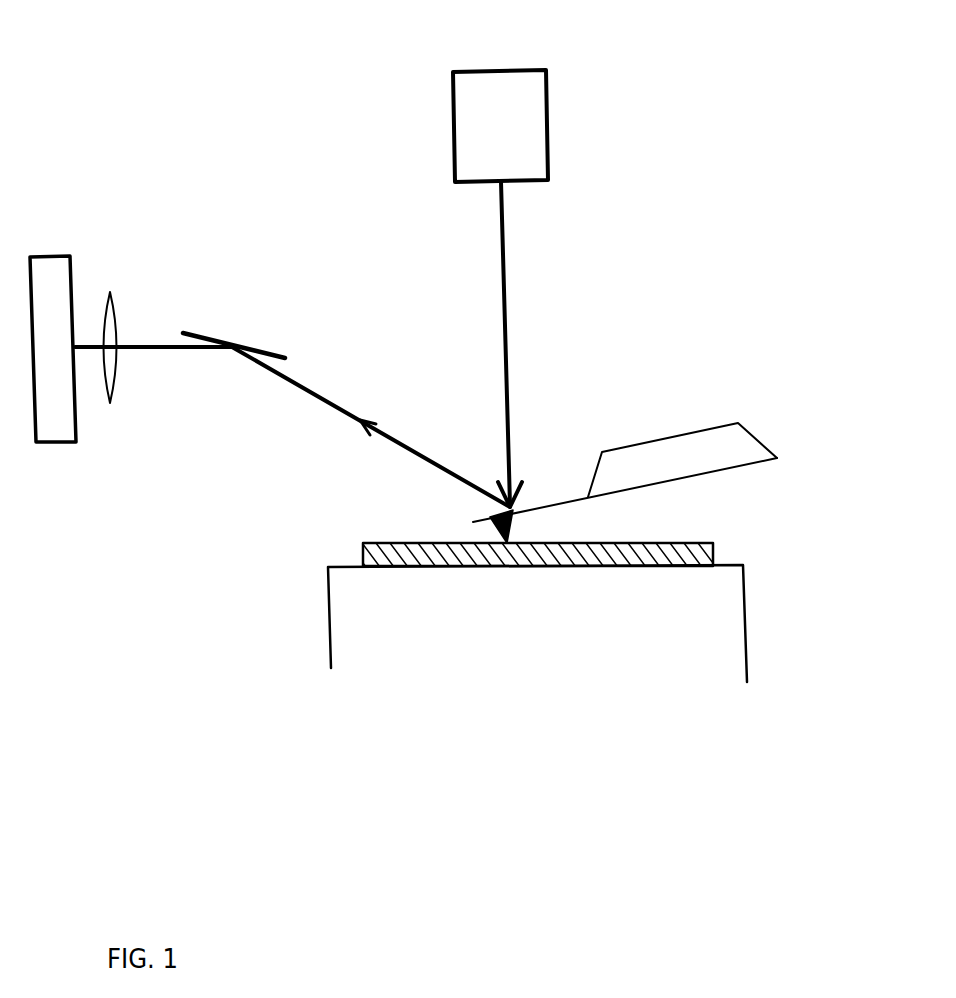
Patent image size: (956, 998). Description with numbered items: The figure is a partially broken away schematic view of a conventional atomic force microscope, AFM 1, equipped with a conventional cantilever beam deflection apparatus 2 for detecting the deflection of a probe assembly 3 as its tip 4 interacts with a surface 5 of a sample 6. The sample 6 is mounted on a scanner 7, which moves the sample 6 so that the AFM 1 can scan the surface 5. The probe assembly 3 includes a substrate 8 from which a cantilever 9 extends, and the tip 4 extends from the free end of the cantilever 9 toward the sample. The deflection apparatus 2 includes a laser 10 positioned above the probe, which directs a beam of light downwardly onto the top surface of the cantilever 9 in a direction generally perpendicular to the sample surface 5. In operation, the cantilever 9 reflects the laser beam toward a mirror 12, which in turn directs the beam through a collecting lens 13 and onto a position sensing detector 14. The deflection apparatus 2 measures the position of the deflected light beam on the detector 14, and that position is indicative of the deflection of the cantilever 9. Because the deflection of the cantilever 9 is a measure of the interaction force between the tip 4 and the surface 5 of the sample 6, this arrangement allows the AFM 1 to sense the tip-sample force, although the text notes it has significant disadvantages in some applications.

The AFM 1 is at (730, 100).
The cantilever beam deflection apparatus 2 is at (292, 297).
The probe assembly 3 is at (575, 438).
The tip 4 is at (498, 520).
The surface 5 is at (580, 523).
The sample 6 is at (693, 543).
The scanner 7 is at (727, 620).
The substrate 8 is at (747, 445).
The cantilever 9 is at (550, 507).
The laser 10 is at (515, 72).
The mirror 12 is at (272, 350).
The collecting lens 13 is at (117, 300).
The position sensing detector 14 is at (45, 262).